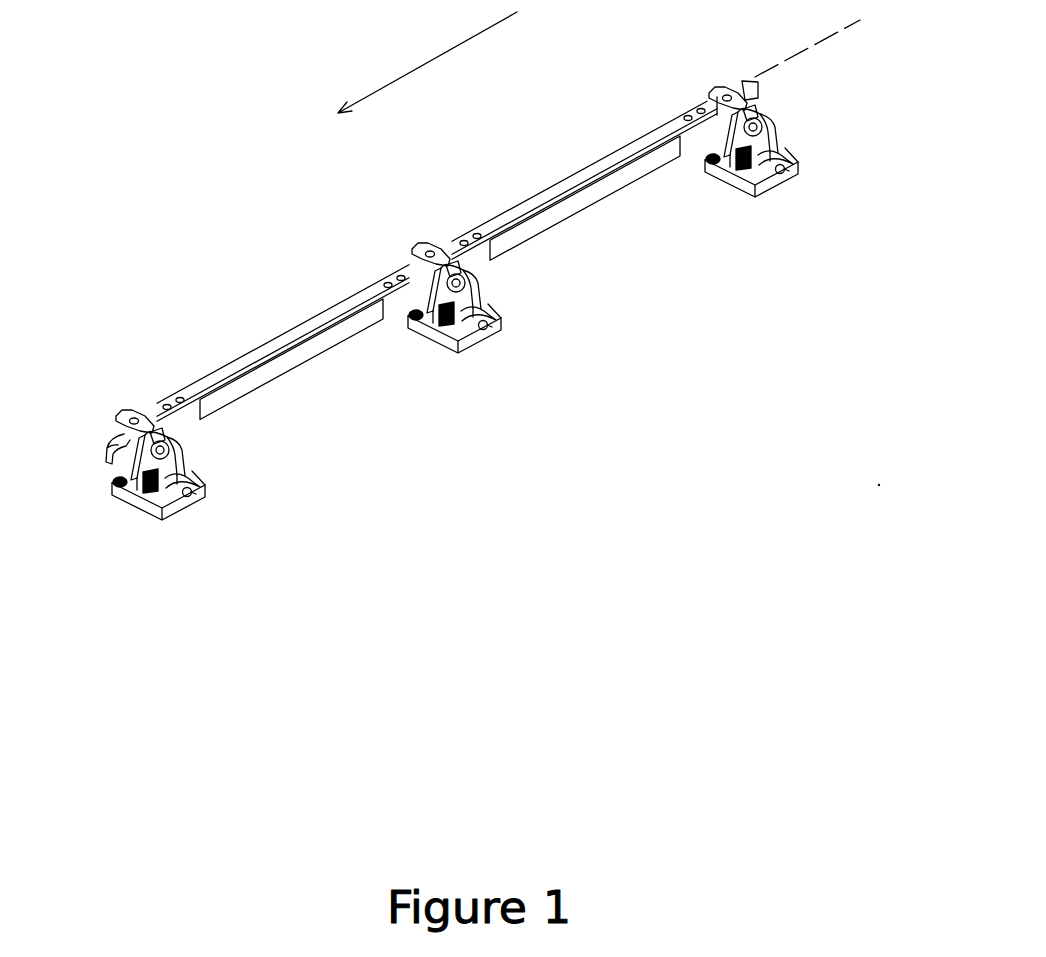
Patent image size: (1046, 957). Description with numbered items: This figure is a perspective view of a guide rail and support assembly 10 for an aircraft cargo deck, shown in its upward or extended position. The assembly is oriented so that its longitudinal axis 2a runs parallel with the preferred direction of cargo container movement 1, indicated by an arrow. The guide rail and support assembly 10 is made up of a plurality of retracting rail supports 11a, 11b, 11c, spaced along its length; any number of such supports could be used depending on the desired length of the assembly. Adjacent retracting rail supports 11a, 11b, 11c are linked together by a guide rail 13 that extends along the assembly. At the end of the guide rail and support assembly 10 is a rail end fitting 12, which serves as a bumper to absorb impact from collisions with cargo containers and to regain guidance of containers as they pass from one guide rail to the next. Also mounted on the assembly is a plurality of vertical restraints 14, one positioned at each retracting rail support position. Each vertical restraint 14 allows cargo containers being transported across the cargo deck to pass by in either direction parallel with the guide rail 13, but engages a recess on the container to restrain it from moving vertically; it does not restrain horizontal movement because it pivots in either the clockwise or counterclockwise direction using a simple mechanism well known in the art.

The preferred direction of cargo container movement 1 is at (414, 72).
The longitudinal axis 2a is at (770, 76).
The guide rail and support assembly 10 is at (305, 209).
The retracting rail support 11a is at (188, 502).
The retracting rail support 11b is at (487, 336).
The retracting rail support 11c is at (790, 166).
The rail end fitting 12 is at (115, 437).
The guide rail 13 is at (286, 340).
The vertical restraint 14 is at (122, 417).